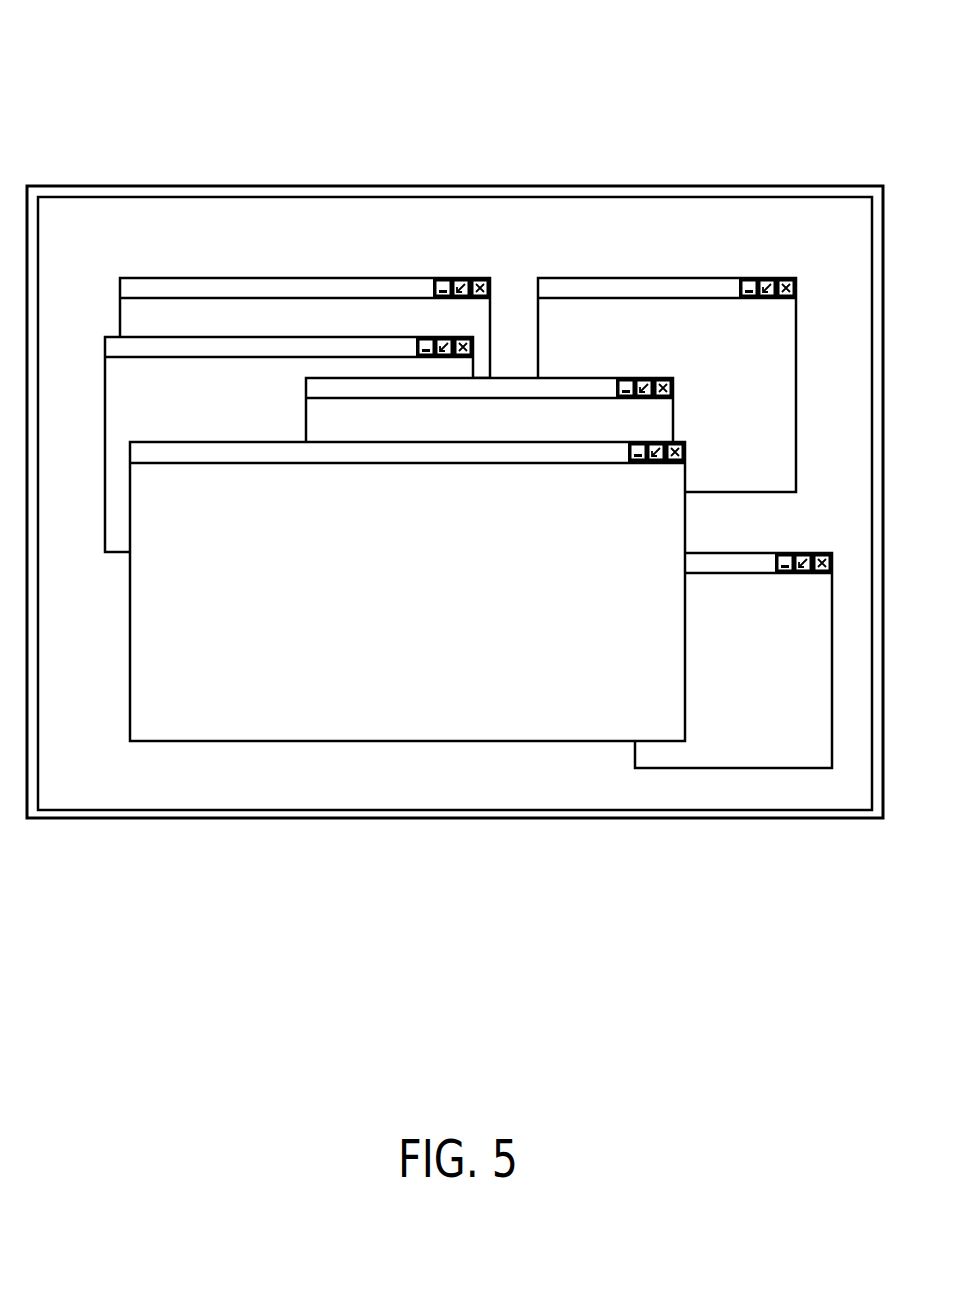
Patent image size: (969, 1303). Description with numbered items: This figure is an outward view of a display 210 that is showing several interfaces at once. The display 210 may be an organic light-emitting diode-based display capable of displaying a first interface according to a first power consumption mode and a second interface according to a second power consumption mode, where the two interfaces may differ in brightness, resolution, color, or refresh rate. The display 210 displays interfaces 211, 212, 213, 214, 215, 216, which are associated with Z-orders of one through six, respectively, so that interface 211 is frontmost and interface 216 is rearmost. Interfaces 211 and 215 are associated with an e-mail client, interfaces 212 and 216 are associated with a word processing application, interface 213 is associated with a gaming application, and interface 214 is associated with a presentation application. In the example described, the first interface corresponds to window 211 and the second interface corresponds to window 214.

The display 210 is at (235, 80).
The interface 211 is at (407, 591).
The interface 212 is at (489, 437).
The interface 213 is at (667, 384).
The interface 214 is at (289, 444).
The interface 215 is at (305, 327).
The interface 216 is at (733, 660).